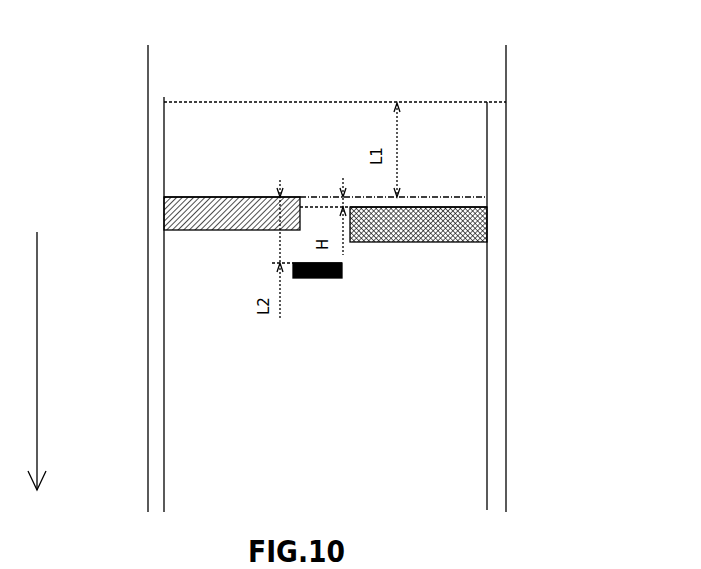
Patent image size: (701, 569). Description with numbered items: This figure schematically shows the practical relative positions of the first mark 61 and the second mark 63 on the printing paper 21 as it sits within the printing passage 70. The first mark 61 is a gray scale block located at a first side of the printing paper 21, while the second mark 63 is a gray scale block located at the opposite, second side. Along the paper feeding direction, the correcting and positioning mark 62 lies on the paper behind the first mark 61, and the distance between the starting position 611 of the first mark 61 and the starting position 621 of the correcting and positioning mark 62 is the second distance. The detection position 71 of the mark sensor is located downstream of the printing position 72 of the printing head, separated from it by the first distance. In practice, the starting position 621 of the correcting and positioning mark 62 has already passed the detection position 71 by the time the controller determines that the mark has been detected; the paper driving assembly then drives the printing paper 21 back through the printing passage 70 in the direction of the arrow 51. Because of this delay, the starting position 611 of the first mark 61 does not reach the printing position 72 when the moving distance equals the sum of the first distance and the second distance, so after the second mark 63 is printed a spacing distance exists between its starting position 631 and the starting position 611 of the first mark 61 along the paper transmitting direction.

The printing paper 21 is at (452, 443).
The arrow 51 is at (48, 361).
The first mark 61 is at (192, 229).
The starting position of the first mark 611 is at (237, 196).
The correcting and positioning mark 62 is at (335, 279).
The starting position of the correcting and positioning mark 621 is at (290, 263).
The second mark 63 is at (487, 226).
The starting position of the second mark 631 is at (437, 207).
The printing passage 70 is at (492, 403).
The detection position of the mark sensor 71 is at (443, 102).
The printing position of the printing head 72 is at (488, 208).